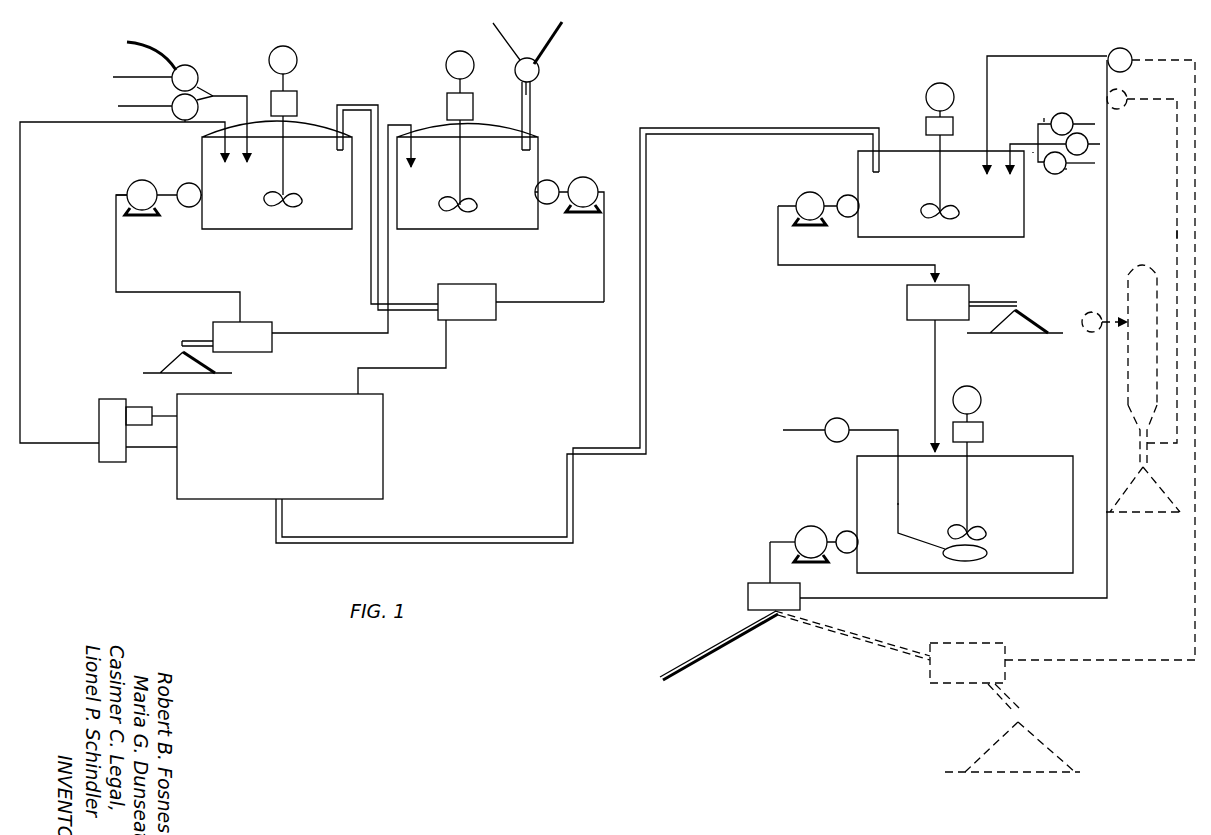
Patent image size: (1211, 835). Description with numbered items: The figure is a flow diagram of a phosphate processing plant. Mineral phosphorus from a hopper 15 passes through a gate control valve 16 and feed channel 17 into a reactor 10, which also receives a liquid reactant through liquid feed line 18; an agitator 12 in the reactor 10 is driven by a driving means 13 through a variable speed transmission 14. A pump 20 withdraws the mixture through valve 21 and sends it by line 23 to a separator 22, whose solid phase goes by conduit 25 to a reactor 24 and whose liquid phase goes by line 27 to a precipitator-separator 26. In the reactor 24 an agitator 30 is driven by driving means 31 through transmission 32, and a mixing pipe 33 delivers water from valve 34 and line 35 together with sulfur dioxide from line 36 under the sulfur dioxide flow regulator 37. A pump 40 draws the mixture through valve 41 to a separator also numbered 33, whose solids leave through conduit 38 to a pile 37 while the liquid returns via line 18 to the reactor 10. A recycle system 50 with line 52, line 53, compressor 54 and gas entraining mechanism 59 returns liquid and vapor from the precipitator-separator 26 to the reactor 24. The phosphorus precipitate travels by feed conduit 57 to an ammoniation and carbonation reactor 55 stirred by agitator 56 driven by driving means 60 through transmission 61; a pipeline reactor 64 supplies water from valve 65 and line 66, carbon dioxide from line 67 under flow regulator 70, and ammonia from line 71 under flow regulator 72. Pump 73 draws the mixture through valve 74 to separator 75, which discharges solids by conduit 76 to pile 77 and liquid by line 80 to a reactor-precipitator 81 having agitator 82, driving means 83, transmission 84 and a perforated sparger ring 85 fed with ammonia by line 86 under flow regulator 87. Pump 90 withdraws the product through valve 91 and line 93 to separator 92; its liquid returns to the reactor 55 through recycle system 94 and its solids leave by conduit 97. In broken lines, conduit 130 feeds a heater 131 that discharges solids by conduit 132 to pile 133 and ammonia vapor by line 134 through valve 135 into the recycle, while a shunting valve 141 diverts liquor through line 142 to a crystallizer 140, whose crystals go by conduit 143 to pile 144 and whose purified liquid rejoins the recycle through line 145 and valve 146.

The reactor 10 is at (545, 134).
The agitator 12 is at (472, 197).
The driving means 13 is at (450, 55).
The variable speed transmission 14 is at (468, 106).
The hopper 15 is at (527, 50).
The gate control valve 16 is at (543, 66).
The feed channel 17 is at (533, 95).
The liquid feed line 18 is at (397, 124).
The pump 20 is at (585, 189).
The valve 21 is at (553, 180).
The separator 22 is at (464, 300).
The line 23 is at (602, 247).
The reactor 24 is at (199, 173).
The conduit 25 is at (369, 266).
The precipitator-separator 26 is at (284, 484).
The line 27 is at (447, 358).
The agitator 30 is at (287, 195).
The driving means 31 is at (293, 50).
The variable speed transmission 32 is at (297, 96).
The mixing pipe / separator 33 is at (247, 95).
The valve 34 is at (191, 115).
The line 35 is at (202, 101).
The line 36 is at (207, 88).
The sulfur dioxide flow regulator / pile 37 is at (178, 207).
The conduit 38 is at (202, 340).
The pump 40 is at (135, 190).
The valve 41 is at (203, 200).
The recycle system 50 is at (81, 449).
The line 52 is at (172, 449).
The line 53 is at (162, 414).
The compressor 54 is at (138, 410).
The ammoniation and carbonation reactor 55 is at (849, 175).
The agitator 56 is at (923, 210).
The feed conduit 57 is at (823, 133).
The gas entraining mechanism 59 is at (107, 412).
The driving means 60 is at (928, 88).
The variable speed transmission 61 is at (925, 125).
The pipeline reactor 64 is at (1023, 142).
The valve 65 is at (1066, 113).
The line 66 is at (1044, 118).
The line 67 is at (1048, 147).
The carbon dioxide flow regulator 70 is at (1087, 138).
The line 71 is at (1033, 153).
The ammonia flow regulator 72 is at (1067, 168).
The pump 73 is at (812, 200).
The valve 74 is at (848, 217).
The separator 75 is at (918, 298).
The conduit 76 is at (988, 302).
The pile 77 is at (1023, 327).
The line 80 is at (935, 357).
The reactor-precipitator 81 is at (851, 476).
The agitator 82 is at (978, 528).
The driving means 83 is at (981, 398).
The variable speed transmission 84 is at (981, 437).
The perforated sparger ring 85 is at (982, 552).
The line 86 is at (899, 503).
The ammonia flow regulator 87 is at (846, 418).
The pump 90 is at (810, 537).
The valve 91 is at (845, 532).
The separator 92 is at (758, 598).
The line 93 is at (773, 553).
The recycle system 94 is at (1109, 583).
The conduit 97 is at (733, 637).
The conduit 130 is at (898, 647).
The heater 131 is at (978, 657).
The conduit 132 is at (1017, 700).
The pile 133 is at (985, 760).
The line 134 is at (1190, 555).
The valve 135 is at (1121, 48).
The crystallizer 140 is at (1142, 390).
The shunting valve 141 is at (1090, 312).
The line 142 is at (1108, 336).
The conduit 143 is at (1143, 450).
The pile 144 is at (1157, 496).
The line 145 is at (1177, 227).
The valve 146 is at (1129, 96).